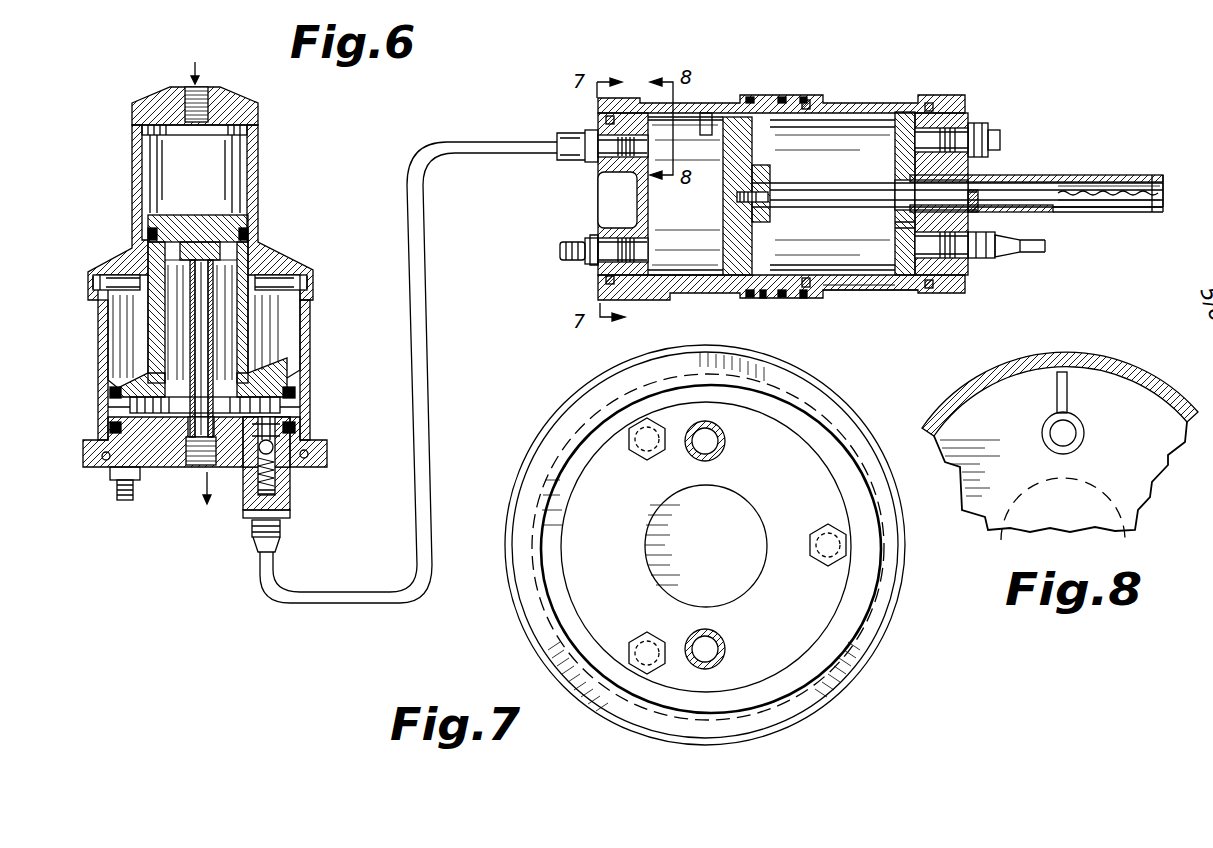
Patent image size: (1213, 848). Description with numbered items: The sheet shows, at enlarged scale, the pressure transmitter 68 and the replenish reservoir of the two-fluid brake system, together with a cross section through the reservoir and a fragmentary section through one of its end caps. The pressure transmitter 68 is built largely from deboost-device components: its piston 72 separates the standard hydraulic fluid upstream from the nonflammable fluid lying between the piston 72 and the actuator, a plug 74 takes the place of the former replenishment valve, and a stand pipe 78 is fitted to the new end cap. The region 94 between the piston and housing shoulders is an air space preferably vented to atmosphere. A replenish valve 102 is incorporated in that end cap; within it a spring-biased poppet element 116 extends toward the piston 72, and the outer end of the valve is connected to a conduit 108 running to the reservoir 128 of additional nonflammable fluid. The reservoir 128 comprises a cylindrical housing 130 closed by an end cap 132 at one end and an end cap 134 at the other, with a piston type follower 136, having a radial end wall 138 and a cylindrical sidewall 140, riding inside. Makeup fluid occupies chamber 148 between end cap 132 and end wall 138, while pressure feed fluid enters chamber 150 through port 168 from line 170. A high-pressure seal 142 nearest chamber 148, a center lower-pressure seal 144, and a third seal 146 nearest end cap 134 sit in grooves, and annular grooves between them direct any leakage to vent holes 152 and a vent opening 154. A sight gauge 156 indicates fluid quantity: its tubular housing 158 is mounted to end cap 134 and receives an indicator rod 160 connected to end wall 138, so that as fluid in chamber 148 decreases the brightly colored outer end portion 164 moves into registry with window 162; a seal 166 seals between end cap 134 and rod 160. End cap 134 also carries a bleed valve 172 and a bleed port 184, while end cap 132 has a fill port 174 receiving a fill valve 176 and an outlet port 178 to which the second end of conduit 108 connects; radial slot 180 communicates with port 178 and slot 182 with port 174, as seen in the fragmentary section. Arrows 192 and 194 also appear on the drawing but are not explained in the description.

In FIG. 6, the pressure transmitter 68 is at (282, 246).
In FIG. 6, the piston 72 is at (150, 342).
In FIG. 6, the plug 74 is at (198, 228).
In FIG. 6, the stand pipe 78 is at (210, 333).
In FIG. 6, the region 94 is at (130, 308).
In FIG. 6, the replenish valve 102 is at (290, 475).
In FIG. 6, the conduit 108 is at (431, 396).
In FIG. 6, the poppet element 116 is at (253, 406).
In FIG. 6, the reservoir 128 is at (818, 76).
In FIG. 6, the cylindrical housing 130 is at (688, 299).
In FIG. 8, the cylindrical housing 130 is at (1183, 402).
In FIG. 6, the end cap 132 is at (597, 174).
In FIG. 7, the end cap 132 is at (818, 612).
In FIG. 8, the end cap 132 is at (1128, 403).
In FIG. 6, the end cap 134 is at (932, 278).
In FIG. 6, the piston type follower 136 is at (793, 88).
In FIG. 6, the radial end wall 138 is at (700, 113).
In FIG. 6, the cylindrical sidewall 140 is at (850, 112).
In FIG. 6, the high-pressure seal 142 is at (748, 298).
In FIG. 6, the lower-pressure seal 144 is at (845, 292).
In FIG. 6, the third seal 146 is at (808, 298).
In FIG. 6, the chamber 148 is at (676, 283).
In FIG. 6, the chamber 150 is at (900, 110).
In FIG. 6, the vent holes 152 is at (765, 298).
In FIG. 6, the vent opening 154 is at (784, 298).
In FIG. 6, the sight gauge 156 is at (1073, 160).
In FIG. 6, the tubular housing 158 is at (1088, 210).
In FIG. 6, the indicator rod 160 is at (1012, 210).
In FIG. 6, the window 162 is at (1035, 200).
In FIG. 6, the outer end portion 164 is at (1125, 185).
In FIG. 6, the seal 166 is at (912, 222).
In FIG. 6, the port 168 is at (968, 250).
In FIG. 6, the line 170 is at (1030, 248).
In FIG. 6, the bleed valve 172 is at (968, 135).
In FIG. 6, the fill port 174 is at (608, 277).
In FIG. 7, the fill port 174 is at (698, 668).
In FIG. 6, the fill valve 176 is at (583, 236).
In FIG. 6, the outlet port 178 is at (602, 132).
In FIG. 7, the outlet port 178 is at (720, 456).
In FIG. 8, the outlet port 178 is at (1057, 437).
In FIG. 6, the slot 180 is at (712, 135).
In FIG. 8, the slot 180 is at (1062, 398).
In FIG. 6, the slot 182 is at (655, 275).
In FIG. 6, the bleed port 184 is at (935, 112).
In FIG. 6, the direction arrow 192 is at (200, 66).
In FIG. 6, the direction arrow 194 is at (198, 478).